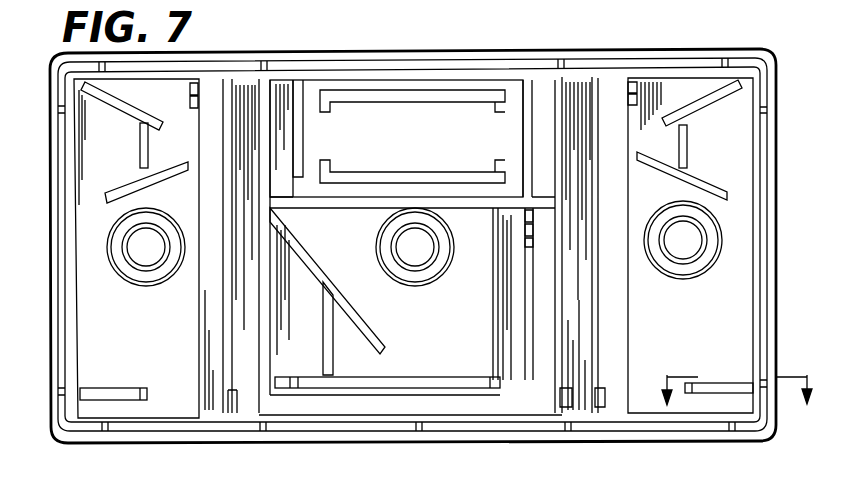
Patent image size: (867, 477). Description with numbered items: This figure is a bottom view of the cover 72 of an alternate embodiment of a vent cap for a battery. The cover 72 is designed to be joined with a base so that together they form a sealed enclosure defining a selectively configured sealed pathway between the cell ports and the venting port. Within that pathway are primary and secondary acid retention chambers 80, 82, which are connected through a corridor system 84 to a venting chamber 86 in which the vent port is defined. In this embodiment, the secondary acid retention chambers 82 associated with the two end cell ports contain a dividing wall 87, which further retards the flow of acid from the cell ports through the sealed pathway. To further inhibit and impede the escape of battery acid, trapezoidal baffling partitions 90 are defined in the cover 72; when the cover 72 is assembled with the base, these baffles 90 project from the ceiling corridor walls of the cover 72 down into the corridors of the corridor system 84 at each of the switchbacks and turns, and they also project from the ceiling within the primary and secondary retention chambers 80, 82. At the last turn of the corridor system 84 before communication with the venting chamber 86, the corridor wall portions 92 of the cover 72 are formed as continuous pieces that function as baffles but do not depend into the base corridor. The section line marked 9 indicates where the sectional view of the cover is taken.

The cover 72 is at (258, 46).
The primary acid retention chamber 80 is at (125, 320).
The secondary acid retention chamber 82 is at (178, 110).
The corridor system 84 is at (286, 96).
The venting chamber 86 is at (450, 152).
The dividing wall 87 is at (112, 103).
The trapezoidal baffling partition 90 is at (197, 92).
The corridor wall portion 92 is at (263, 118).
The section line 9 is at (739, 372).